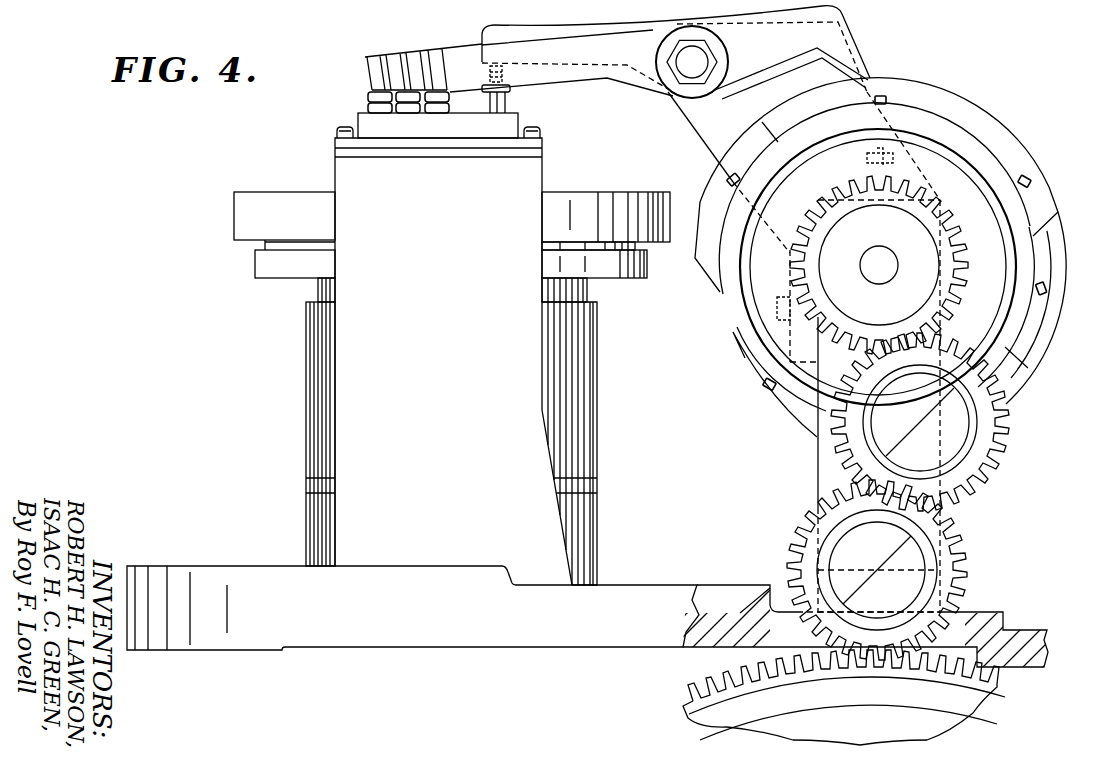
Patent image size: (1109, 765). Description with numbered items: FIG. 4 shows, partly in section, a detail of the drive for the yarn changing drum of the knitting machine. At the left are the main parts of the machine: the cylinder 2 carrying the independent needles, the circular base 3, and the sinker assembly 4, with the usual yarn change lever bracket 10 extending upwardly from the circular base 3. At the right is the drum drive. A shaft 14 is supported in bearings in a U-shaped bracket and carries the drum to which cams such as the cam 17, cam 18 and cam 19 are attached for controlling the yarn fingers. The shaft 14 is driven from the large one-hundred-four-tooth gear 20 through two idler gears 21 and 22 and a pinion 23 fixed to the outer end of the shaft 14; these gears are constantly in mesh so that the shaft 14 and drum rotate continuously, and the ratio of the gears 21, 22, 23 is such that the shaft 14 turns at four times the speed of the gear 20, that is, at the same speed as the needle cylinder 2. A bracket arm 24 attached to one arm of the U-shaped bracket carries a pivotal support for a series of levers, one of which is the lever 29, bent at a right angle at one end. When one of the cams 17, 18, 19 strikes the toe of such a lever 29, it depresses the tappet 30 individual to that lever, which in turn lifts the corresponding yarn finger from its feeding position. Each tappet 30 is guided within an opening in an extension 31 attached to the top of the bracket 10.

The cylinder 2 is at (593, 472).
The circular base 3 is at (618, 647).
The sinker assembly 4 is at (284, 235).
The yarn change lever bracket 10 is at (438, 352).
The shaft 14 is at (879, 265).
The cam 17 is at (775, 406).
The cam 18 is at (1050, 206).
The cam 19 is at (1003, 133).
The 104-gear 20 is at (844, 697).
The idler gear 21 is at (955, 556).
The idler gear 22 is at (993, 430).
The pinion 23 is at (955, 270).
The bracket arm 24 is at (804, 129).
The lever 29 is at (670, 32).
The tappet 30 is at (506, 103).
The extension 31 is at (438, 93).